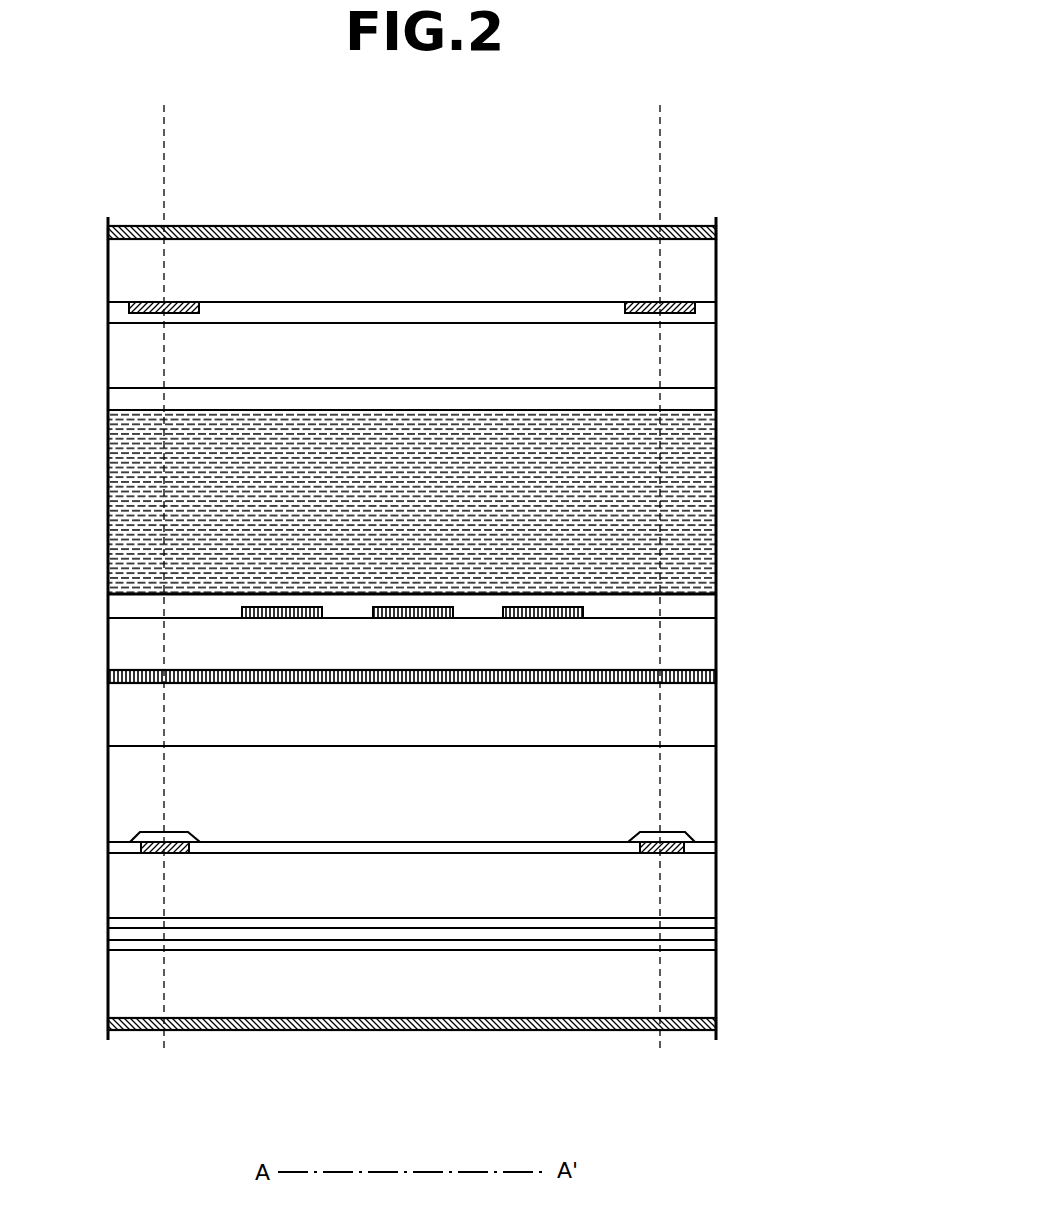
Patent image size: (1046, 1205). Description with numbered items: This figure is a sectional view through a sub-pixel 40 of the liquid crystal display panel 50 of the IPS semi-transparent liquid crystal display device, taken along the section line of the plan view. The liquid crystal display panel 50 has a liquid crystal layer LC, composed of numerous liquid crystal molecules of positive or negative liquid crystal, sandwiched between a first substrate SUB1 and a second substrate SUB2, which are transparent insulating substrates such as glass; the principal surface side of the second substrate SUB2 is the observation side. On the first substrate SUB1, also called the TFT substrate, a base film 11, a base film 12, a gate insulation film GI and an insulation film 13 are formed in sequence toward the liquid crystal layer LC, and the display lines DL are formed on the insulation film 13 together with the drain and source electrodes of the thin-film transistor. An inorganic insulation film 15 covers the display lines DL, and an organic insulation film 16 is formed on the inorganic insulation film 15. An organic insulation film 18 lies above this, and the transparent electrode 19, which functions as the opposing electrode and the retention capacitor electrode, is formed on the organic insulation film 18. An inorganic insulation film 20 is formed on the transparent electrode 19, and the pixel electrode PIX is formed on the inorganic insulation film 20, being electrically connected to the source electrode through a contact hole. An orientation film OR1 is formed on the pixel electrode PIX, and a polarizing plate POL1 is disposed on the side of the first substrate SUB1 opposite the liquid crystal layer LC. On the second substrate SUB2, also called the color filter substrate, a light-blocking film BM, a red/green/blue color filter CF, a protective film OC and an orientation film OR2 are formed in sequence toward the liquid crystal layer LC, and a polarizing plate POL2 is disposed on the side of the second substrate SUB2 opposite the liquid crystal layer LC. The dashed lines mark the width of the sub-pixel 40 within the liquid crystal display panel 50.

The liquid crystal display panel 50 is at (688, 193).
The sub-pixel 40 is at (658, 117).
The polarizing plate POL2 is at (503, 228).
The second substrate SUB2 is at (700, 268).
The light-blocking film BM is at (181, 305).
The color filter CF is at (385, 310).
The protective film OC is at (700, 355).
The orientation film OR2 is at (700, 397).
The liquid crystal layer LC is at (700, 495).
The orientation film OR1 is at (700, 605).
The pixel electrode PIX is at (545, 618).
The inorganic insulation film 20 is at (700, 640).
The transparent electrode 19 is at (612, 683).
The organic insulation film 18 is at (700, 710).
The organic insulation film 16 is at (700, 788).
The inorganic insulation film 15 is at (440, 850).
The display line DL is at (153, 855).
The insulation film 13 is at (385, 888).
The gate insulation film GI is at (330, 922).
The base film 12 is at (275, 933).
The base film 11 is at (229, 945).
The first substrate SUB1 is at (698, 982).
The polarizing plate POL1 is at (135, 1032).